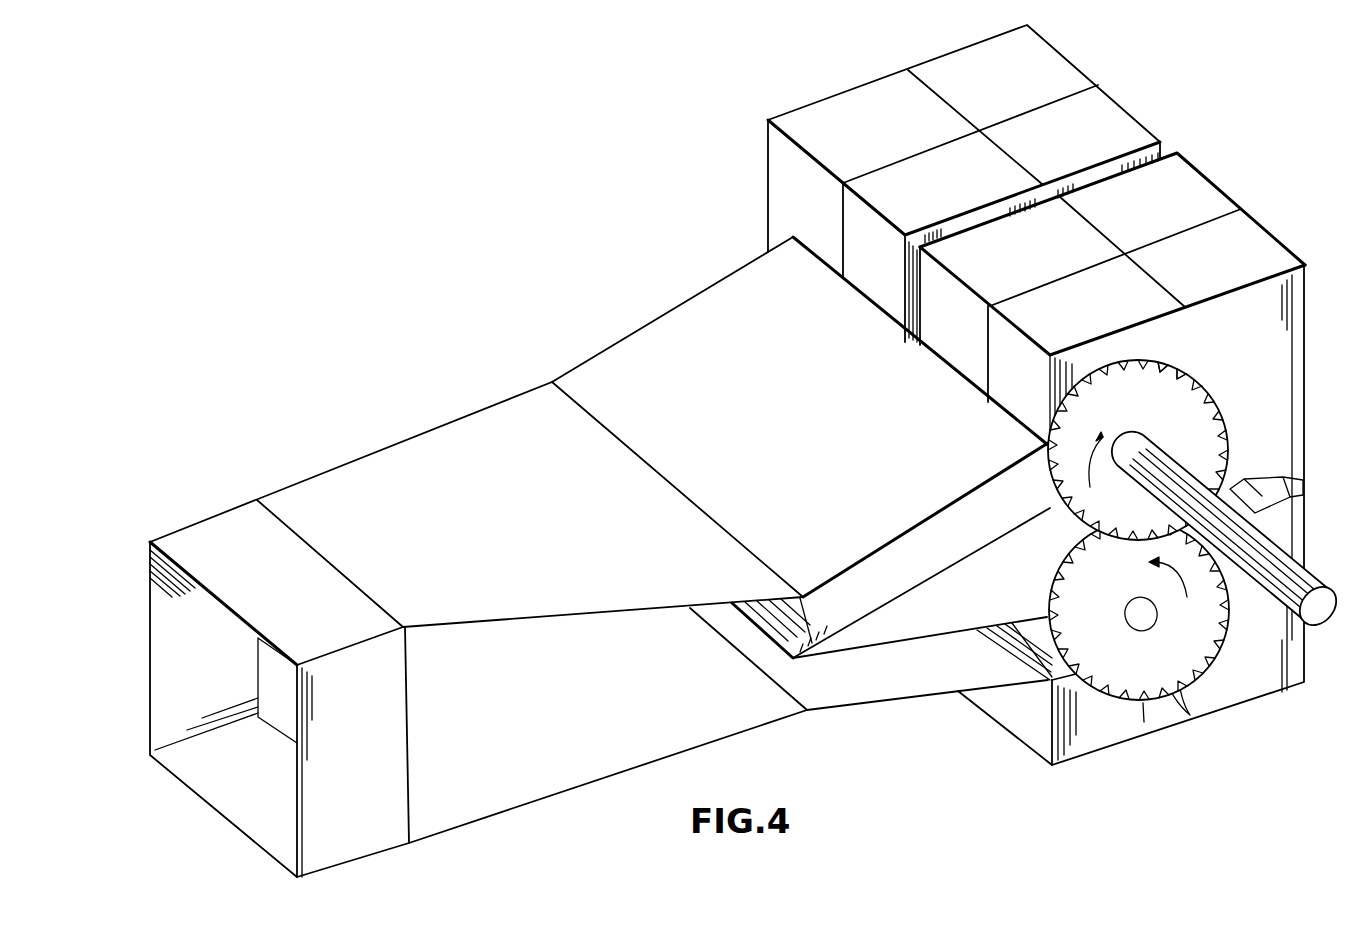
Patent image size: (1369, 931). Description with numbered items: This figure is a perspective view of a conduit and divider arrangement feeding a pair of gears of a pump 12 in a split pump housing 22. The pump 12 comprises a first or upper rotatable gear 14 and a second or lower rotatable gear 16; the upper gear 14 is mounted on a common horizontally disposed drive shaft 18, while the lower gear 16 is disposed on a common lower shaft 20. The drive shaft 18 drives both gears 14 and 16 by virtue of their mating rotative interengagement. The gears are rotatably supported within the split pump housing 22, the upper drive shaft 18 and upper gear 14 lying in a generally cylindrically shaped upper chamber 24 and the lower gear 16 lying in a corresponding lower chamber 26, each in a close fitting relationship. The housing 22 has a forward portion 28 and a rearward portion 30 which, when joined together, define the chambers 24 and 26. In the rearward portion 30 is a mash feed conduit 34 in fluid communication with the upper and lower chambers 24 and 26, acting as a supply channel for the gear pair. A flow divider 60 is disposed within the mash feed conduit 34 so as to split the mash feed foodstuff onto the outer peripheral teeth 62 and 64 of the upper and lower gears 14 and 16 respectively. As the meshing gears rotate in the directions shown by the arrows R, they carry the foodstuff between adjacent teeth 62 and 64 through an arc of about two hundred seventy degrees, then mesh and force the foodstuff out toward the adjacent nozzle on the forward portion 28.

The pump 12 is at (1073, 82).
The upper rotatable gear 14 is at (1202, 418).
The lower rotatable gear 16 is at (1088, 667).
The drive shaft 18 is at (1303, 562).
The lower shaft 20 is at (1150, 617).
The split pump housing 22 is at (1304, 434).
The upper chamber 24 is at (1187, 365).
The lower chamber 26 is at (1213, 647).
The forward portion 28 is at (1283, 358).
The rearward portion 30 is at (778, 184).
The mash feed conduit 34 is at (661, 317).
The flow divider 60 is at (880, 628).
The teeth of upper gear 62 is at (891, 542).
The teeth of lower gear 64 is at (1168, 677).